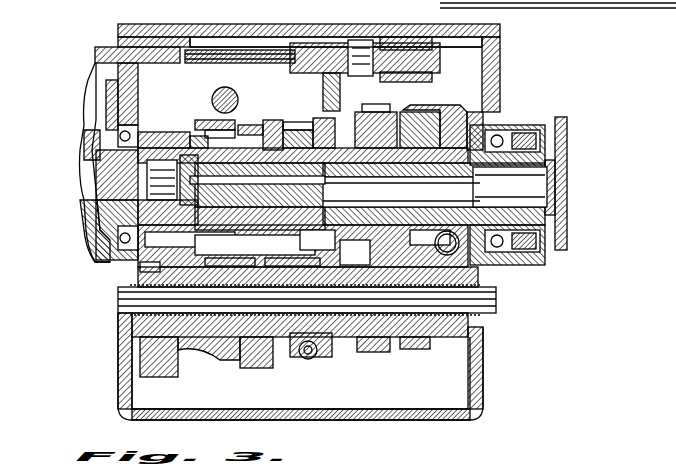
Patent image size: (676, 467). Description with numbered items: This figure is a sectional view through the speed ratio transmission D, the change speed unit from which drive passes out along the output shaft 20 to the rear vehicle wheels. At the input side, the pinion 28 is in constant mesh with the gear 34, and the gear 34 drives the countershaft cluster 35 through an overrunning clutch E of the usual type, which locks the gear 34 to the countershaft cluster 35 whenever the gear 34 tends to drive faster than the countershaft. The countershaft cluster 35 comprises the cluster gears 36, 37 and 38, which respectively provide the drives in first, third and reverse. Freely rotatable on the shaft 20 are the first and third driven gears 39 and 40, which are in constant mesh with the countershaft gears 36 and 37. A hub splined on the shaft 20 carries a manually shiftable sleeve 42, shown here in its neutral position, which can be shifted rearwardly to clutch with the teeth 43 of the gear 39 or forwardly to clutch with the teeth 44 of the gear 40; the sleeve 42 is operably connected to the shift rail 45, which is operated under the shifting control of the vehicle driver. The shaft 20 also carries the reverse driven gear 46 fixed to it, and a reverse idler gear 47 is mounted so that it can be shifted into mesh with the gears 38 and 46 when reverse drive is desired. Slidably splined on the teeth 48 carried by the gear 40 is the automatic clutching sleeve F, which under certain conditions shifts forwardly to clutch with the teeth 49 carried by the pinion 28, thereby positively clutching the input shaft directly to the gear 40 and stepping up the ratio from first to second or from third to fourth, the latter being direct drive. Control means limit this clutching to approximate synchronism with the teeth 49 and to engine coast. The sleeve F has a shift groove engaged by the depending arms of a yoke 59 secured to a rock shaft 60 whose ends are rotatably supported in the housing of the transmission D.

The speed ratio transmission D is at (272, 25).
The shift rail 45 is at (327, 50).
The yoke 59 is at (232, 68).
The rock shaft 60 is at (222, 88).
The automatic clutching sleeve F is at (253, 122).
The third driven gear 40 is at (262, 120).
The manually shiftable sleeve 42 is at (323, 120).
The teeth 44 is at (288, 128).
The teeth 43 is at (357, 120).
The first driven gear 39 is at (384, 106).
The reverse driven gear 46 is at (422, 110).
The pinion 28 is at (147, 132).
The teeth 48 is at (213, 131).
The teeth 49 is at (197, 133).
The output shaft 20 is at (560, 218).
The reverse idler gear 47 is at (497, 293).
The cluster gear 38 is at (423, 340).
The gear 34 is at (160, 373).
The cluster gear 37 is at (253, 368).
The overrunning clutch E is at (193, 345).
The countershaft cluster 35 is at (343, 340).
The cluster gear 36 is at (377, 355).